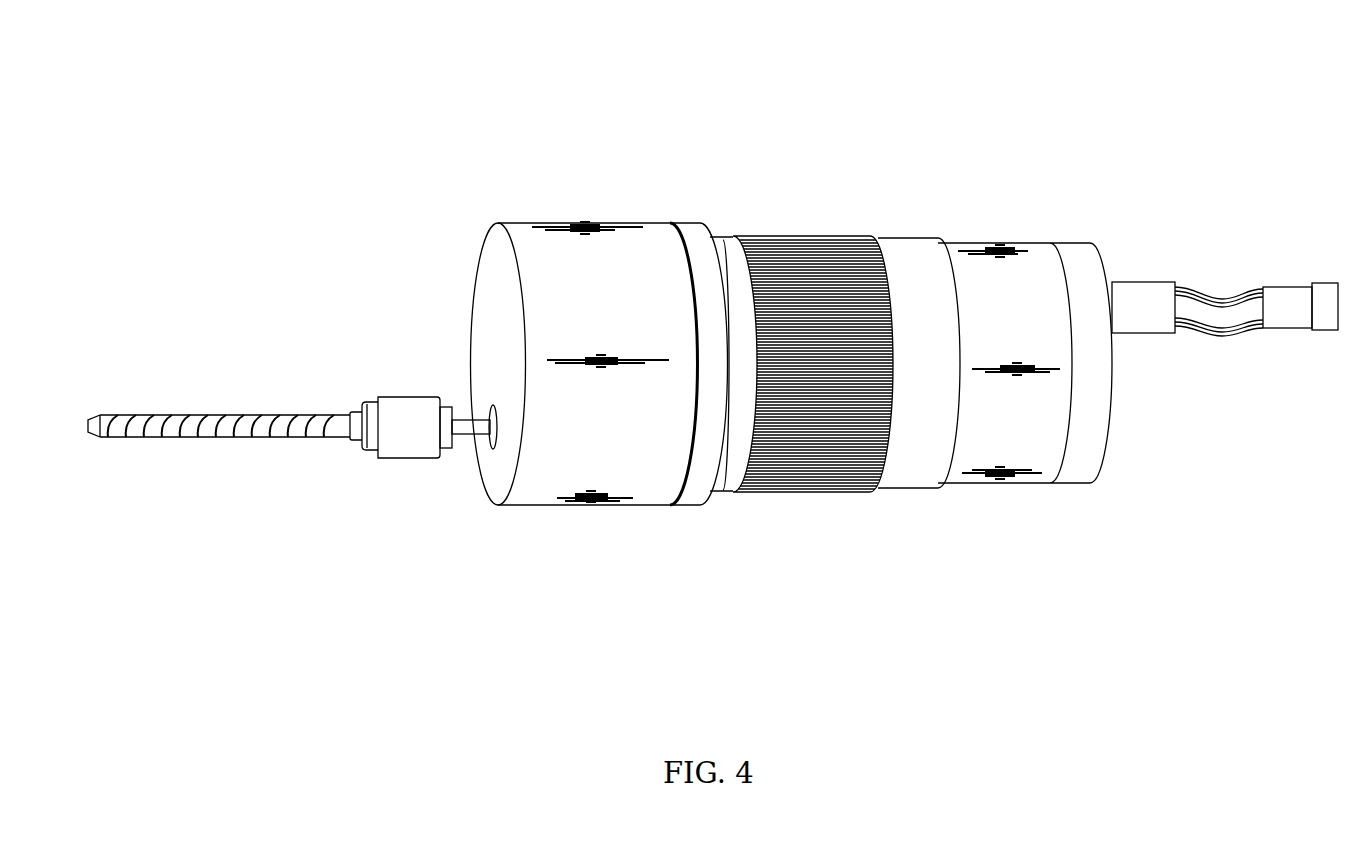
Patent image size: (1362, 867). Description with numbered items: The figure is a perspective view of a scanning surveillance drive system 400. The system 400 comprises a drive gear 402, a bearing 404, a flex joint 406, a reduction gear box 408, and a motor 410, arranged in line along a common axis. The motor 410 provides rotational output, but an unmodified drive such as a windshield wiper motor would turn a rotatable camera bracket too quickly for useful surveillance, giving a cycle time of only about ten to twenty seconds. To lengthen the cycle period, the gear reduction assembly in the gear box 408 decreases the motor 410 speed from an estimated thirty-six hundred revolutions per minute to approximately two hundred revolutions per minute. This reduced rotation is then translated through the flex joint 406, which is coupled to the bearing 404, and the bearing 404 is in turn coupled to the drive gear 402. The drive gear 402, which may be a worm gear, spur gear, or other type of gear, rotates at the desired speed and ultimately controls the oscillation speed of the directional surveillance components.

The system 400 is at (1130, 143).
The drive gear 402 is at (187, 432).
The bearing 404 is at (372, 408).
The flex joint 406 is at (412, 443).
The reduction gear box 408 is at (560, 282).
The motor 410 is at (877, 485).